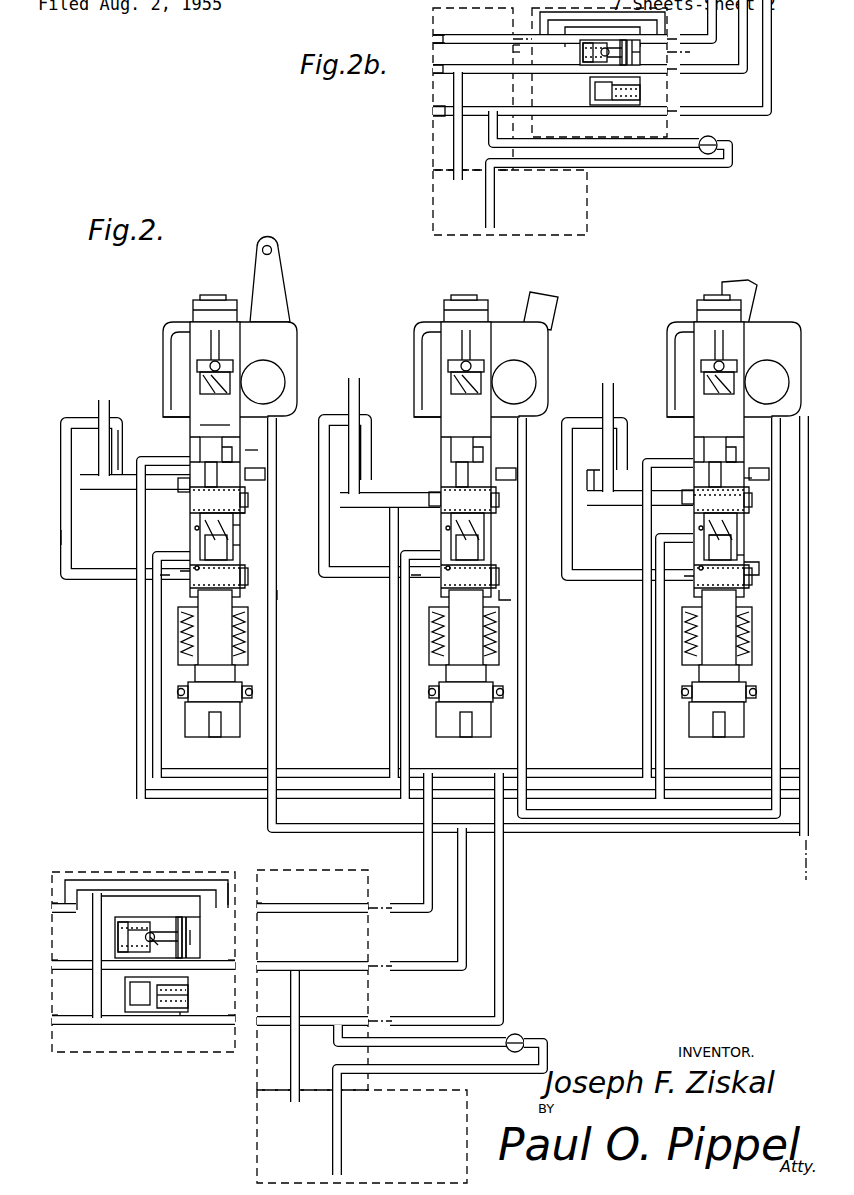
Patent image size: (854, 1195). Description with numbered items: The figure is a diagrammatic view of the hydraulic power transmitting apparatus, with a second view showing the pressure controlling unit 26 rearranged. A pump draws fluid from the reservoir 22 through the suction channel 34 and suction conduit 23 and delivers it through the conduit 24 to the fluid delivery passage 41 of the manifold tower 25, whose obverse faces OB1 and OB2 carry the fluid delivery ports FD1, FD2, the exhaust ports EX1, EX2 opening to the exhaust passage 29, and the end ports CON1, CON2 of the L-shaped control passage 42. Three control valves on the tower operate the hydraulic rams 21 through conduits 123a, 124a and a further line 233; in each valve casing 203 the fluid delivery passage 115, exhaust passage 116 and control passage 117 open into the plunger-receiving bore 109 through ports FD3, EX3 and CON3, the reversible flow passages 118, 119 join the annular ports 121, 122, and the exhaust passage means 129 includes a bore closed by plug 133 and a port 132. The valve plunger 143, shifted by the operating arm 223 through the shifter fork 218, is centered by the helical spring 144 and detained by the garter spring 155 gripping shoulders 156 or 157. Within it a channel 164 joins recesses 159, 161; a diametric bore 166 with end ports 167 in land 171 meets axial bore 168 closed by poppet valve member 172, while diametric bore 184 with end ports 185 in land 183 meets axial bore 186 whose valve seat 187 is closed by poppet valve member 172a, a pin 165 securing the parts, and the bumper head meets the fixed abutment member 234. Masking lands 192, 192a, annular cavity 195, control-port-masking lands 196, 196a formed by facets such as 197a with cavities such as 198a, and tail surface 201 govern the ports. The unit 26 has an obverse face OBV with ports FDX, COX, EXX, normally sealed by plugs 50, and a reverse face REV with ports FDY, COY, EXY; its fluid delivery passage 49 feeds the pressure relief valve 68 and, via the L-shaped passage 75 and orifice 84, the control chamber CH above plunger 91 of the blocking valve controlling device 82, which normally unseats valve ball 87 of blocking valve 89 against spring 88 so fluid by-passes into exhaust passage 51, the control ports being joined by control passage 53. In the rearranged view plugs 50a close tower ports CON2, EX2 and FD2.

In FIG. 2, the hydraulic ram 21 is at (112, 402).
In FIG. 2B, the reservoir 22 is at (580, 212).
In FIG. 2, the reservoir 22 is at (460, 1108).
In FIG. 2, the suction conduit 23 is at (540, 1035).
In FIG. 2, the delivery conduit 24 is at (493, 1040).
In FIG. 2B, the manifold tower 25 is at (428, 88).
In FIG. 2, the manifold tower 25 is at (372, 940).
In FIG. 2B, the pressure controlling unit 26 is at (664, 128).
In FIG. 2, the pressure controlling unit 26 is at (104, 868).
In FIG. 2B, the exhaust passage 29 is at (460, 95).
In FIG. 2, the exhaust passage 29 is at (301, 988).
In FIG. 2B, the suction channel 34 is at (495, 190).
In FIG. 2, the suction channel 34 is at (343, 1128).
In FIG. 2B, the fluid delivery passage 41 is at (435, 114).
In FIG. 2B, the L-shaped control passage 42 is at (478, 31).
In FIG. 2, the L-shaped control passage 42 is at (335, 903).
In FIG. 2, the fluid delivery passage 49 is at (182, 1025).
In FIG. 2, the plug 50 is at (52, 908).
In FIG. 2B, the plug 50a is at (410, 30).
In FIG. 2, the exhaust passage 51 is at (190, 975).
In FIG. 2, the control passage 53 is at (135, 880).
In FIG. 2B, the pressure relief valve 68 is at (608, 110).
In FIG. 2, the pressure relief valve 68 is at (152, 1012).
In FIG. 2B, the L-shaped passage 75 is at (578, 53).
In FIG. 2, the L-shaped passage 75 is at (86, 944).
In FIG. 2B, the blocking valve controlling device 82 is at (626, 42).
In FIG. 2, the blocking valve controlling device 82 is at (178, 917).
In FIG. 2B, the orifice 84 is at (590, 42).
In FIG. 2, the orifice 84 is at (116, 924).
In FIG. 2, the valve ball 87 is at (150, 940).
In FIG. 2, the spring 88 is at (135, 925).
In FIG. 2B, the fluid blocking valve 89 is at (604, 56).
In FIG. 2, the fluid blocking valve 89 is at (152, 932).
In FIG. 2, the plunger 91 is at (188, 940).
In FIG. 2, the plunger-receiving bore 109 is at (236, 545).
In FIG. 2, the fluid delivery passage 115 is at (362, 799).
In FIG. 2, the exhaust passage 116 is at (405, 835).
In FIG. 2, the control passage 117 is at (318, 767).
In FIG. 2, the reversible flow passage 118 is at (168, 498).
In FIG. 2, the reversible flow passage 119 is at (172, 576).
In FIG. 2, the annular reversible flow port 121 is at (250, 500).
In FIG. 2, the annular reversible flow port 122 is at (182, 575).
In FIG. 2, the conduit 123a is at (120, 500).
In FIG. 2, the conduit 124a is at (61, 538).
In FIG. 2, the exhaust passage means 129 is at (277, 490).
In FIG. 2, the port 132 is at (278, 600).
In FIG. 2, the plug 133 is at (513, 600).
In FIG. 2, the valve plunger 143 is at (204, 404).
In FIG. 2, the helical spring 144 is at (178, 642).
In FIG. 2, the garter spring 155 is at (178, 692).
In FIG. 2, the annular detent shoulder 156 is at (195, 670).
In FIG. 2, the shoulder 157 is at (200, 710).
In FIG. 2, the recess 159 is at (756, 625).
In FIG. 2, the recess 161 is at (747, 482).
In FIG. 2, the channel 164 is at (748, 570).
In FIG. 2, the pin 165 is at (195, 527).
In FIG. 2, the diametric bore 166 is at (690, 600).
In FIG. 2, the end port 167 is at (195, 567).
In FIG. 2, the axial bore 168 is at (748, 590).
In FIG. 2, the cylindrical land 171 is at (248, 578).
In FIG. 2, the poppet valve member 172 is at (690, 610).
In FIG. 2, the poppet valve member 172a is at (742, 536).
In FIG. 2, the cylindrical land 183 is at (246, 511).
In FIG. 2, the diametric bore 184 is at (736, 560).
In FIG. 2, the end port 185 is at (690, 530).
In FIG. 2, the axial bore 186 is at (736, 545).
In FIG. 2, the valve seat 187 is at (690, 513).
In FIG. 2, the fluid-delivery-port masking land 192 is at (229, 536).
In FIG. 2, the land 192a is at (242, 525).
In FIG. 2, the annular cavity 195 is at (190, 468).
In FIG. 2, the control-port-masking land 196 is at (200, 455).
In FIG. 2, the control-port-masking land 196a is at (240, 470).
In FIG. 2, the facet 197a is at (263, 382).
In FIG. 2, the cavity 198a is at (248, 428).
In FIG. 2, the control port masking tail surface 201 is at (200, 430).
In FIG. 2, the housing 203 is at (175, 345).
In FIG. 2, the shifter fork 218 is at (222, 365).
In FIG. 2, the operating arm 223 is at (280, 278).
In FIG. 2, the pipe 233 is at (80, 484).
In FIG. 2, the fixed abutment member 234 is at (60, 430).
In FIG. 2, the control port CON1 is at (366, 903).
In FIG. 2B, the control port CON2 is at (432, 40).
In FIG. 2, the control port CON2 is at (262, 903).
In FIG. 2, the control port CON3 is at (186, 462).
In FIG. 2, the exhaust port EX1 is at (365, 970).
In FIG. 2B, the exhaust port EX2 is at (428, 68).
In FIG. 2, the exhaust port EX2 is at (262, 962).
In FIG. 2, the exhaust port EX3 is at (262, 448).
In FIG. 2, the fluid delivery port FD1 is at (366, 1018).
In FIG. 2B, the fluid delivery port FD2 is at (432, 113).
In FIG. 2, the fluid delivery port FD2 is at (262, 1018).
In FIG. 2, the fluid delivery port FD3 is at (150, 557).
In FIG. 2, the control port COX is at (52, 913).
In FIG. 2, the control port COY is at (228, 880).
In FIG. 2, the exhaust port EXX is at (52, 970).
In FIG. 2, the exhaust port EXY is at (230, 972).
In FIG. 2, the fluid delivery port FDX is at (52, 1025).
In FIG. 2, the fluid delivery port FDY is at (232, 1026).
In FIG. 2B, the control chamber CH is at (641, 52).
In FIG. 2, the control chamber CH is at (192, 924).
In FIG. 2B, the obverse face OB1 is at (512, 53).
In FIG. 2B, the obverse face OB2 is at (432, 20).
In FIG. 2B, the obverse face OBV is at (670, 54).
In FIG. 2B, the reverse face REV is at (505, 31).